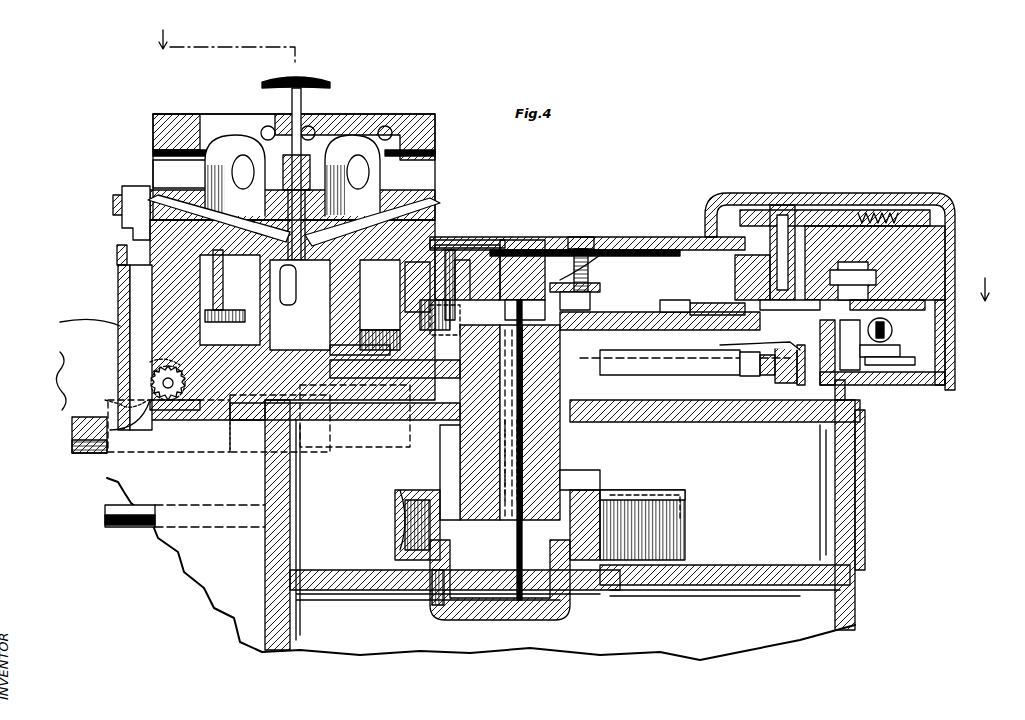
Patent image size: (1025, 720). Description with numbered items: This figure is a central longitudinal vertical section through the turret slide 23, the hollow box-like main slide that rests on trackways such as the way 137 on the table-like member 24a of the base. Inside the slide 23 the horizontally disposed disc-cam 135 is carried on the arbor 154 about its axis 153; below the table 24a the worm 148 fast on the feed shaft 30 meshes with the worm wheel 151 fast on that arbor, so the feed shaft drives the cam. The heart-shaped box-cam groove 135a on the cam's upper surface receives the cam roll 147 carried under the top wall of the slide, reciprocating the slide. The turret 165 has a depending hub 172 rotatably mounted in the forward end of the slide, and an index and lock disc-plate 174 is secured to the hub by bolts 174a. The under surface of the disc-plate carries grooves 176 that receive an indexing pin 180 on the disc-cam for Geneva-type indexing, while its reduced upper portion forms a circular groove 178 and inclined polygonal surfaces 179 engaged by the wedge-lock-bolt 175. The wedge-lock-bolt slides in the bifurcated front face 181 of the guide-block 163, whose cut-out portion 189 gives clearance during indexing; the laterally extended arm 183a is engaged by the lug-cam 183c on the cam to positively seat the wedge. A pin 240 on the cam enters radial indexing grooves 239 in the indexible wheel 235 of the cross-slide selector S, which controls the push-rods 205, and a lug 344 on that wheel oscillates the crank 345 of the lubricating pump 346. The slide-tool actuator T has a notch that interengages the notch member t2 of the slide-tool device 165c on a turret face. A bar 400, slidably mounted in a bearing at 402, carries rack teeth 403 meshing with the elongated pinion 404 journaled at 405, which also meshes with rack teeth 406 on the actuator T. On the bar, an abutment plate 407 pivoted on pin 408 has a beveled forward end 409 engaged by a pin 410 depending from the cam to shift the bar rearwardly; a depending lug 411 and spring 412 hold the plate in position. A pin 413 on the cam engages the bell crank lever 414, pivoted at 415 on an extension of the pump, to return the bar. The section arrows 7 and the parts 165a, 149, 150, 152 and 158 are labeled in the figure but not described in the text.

The section line 7- 7 is at (569, 172).
The turret 165 is at (170, 114).
The head block wall 165a is at (153, 136).
The slide-tool device 165c is at (113, 198).
The notch member t2 is at (122, 230).
The depending hub 172 is at (117, 252).
The index and lock disc-plate 174 is at (145, 302).
The bolts 174a is at (215, 215).
The circular groove 178 is at (205, 280).
The slide-tool actuator T is at (82, 321).
The grooves 176 is at (150, 345).
The trackway 137 is at (60, 352).
The bar 400 is at (150, 365).
The bearings 405 is at (160, 377).
The elongated pinion 404 is at (105, 400).
The push-rods 205 is at (78, 445).
The rack teeth 406 is at (130, 440).
The rack teeth 403 is at (192, 412).
The bearing 402 is at (240, 405).
The feed shaft 30 is at (120, 528).
The wedge-lock-bolt 175 is at (435, 245).
The bifurcated front face 181 is at (480, 240).
The cut-out portion 189 is at (465, 250).
The cam roll 147 is at (535, 300).
The lug-cam 183c is at (565, 280).
The guide-block 163 is at (585, 238).
The turret slide 23 is at (612, 238).
The intermediate arm 183a is at (600, 288).
The cross-slide selector S is at (720, 262).
The disc-cam 135 is at (625, 312).
The box-cam groove 135a is at (712, 300).
The forward end 409 is at (670, 300).
The pin 240 is at (755, 300).
The radial indexing grooves 239 is at (800, 300).
The indexible wheel 235 is at (860, 325).
The lug 344 is at (848, 262).
The crank 345 is at (945, 255).
The lubricating pump 346 is at (900, 350).
The bell crank lever 414 is at (775, 352).
The table-like member 24a is at (865, 410).
The polygonal surfaces 179 is at (427, 312).
The pin 413 is at (440, 335).
The indexing pin 180 is at (408, 348).
The pin 410 is at (420, 362).
The axis 153 is at (522, 455).
The arbor 154 is at (462, 448).
The bearing 149 is at (440, 492).
The worm 148 is at (560, 478).
The key 150 is at (575, 485).
The worm wheel 151 is at (620, 490).
The bearing 152 is at (430, 540).
The cup 158 is at (530, 598).
The abutment plate 407 is at (710, 375).
The pin 408 is at (748, 378).
The depending lug 411 is at (765, 380).
The spring 412 is at (780, 385).
The pivot 415 is at (800, 388).